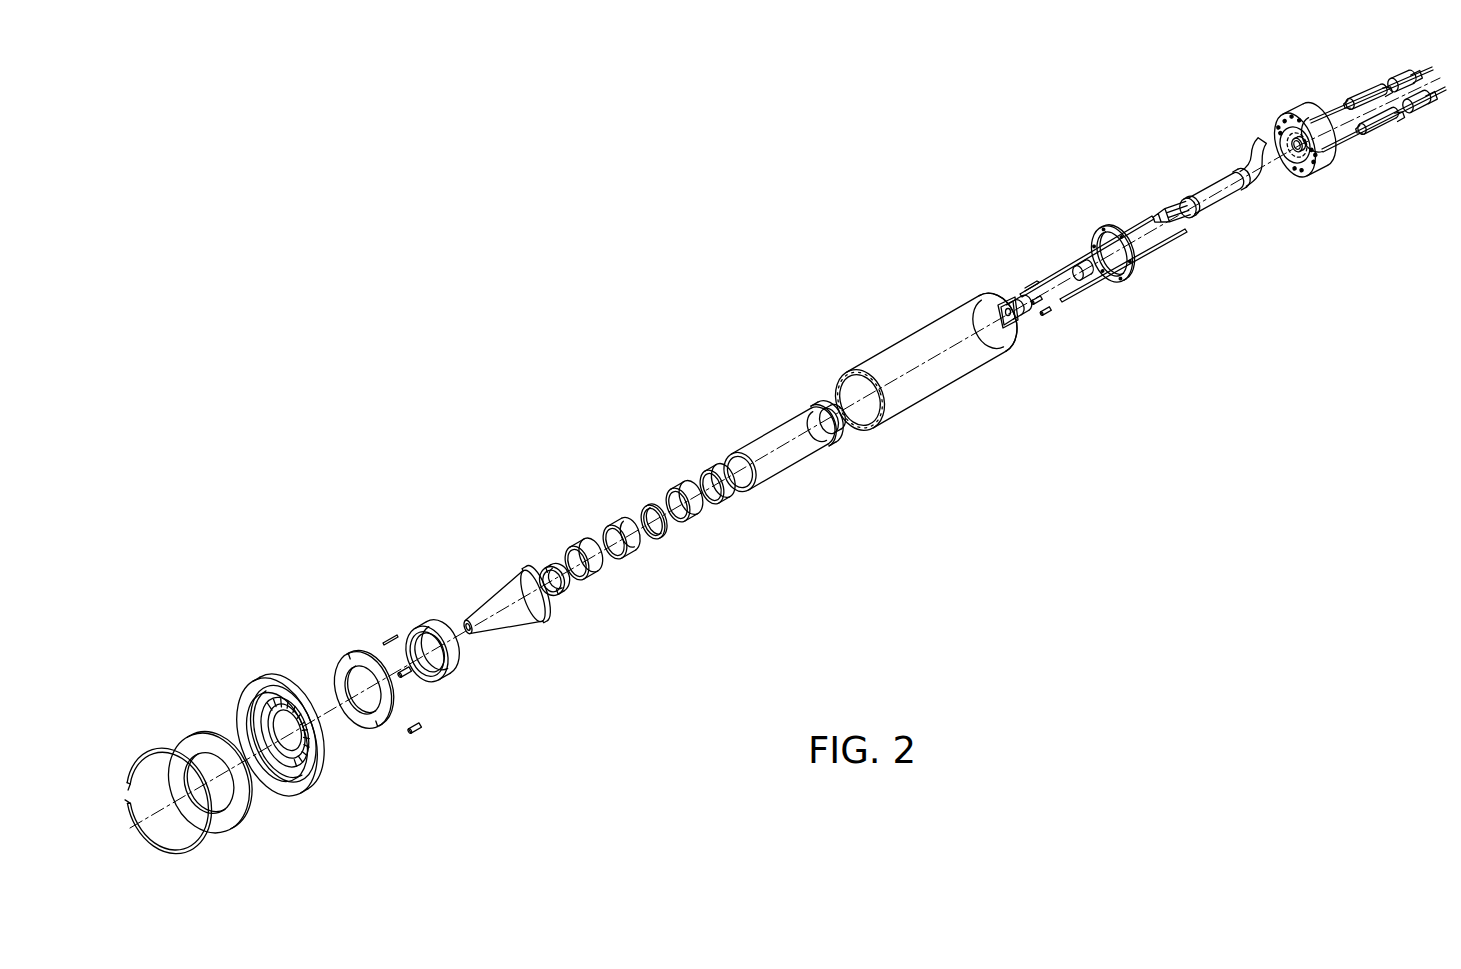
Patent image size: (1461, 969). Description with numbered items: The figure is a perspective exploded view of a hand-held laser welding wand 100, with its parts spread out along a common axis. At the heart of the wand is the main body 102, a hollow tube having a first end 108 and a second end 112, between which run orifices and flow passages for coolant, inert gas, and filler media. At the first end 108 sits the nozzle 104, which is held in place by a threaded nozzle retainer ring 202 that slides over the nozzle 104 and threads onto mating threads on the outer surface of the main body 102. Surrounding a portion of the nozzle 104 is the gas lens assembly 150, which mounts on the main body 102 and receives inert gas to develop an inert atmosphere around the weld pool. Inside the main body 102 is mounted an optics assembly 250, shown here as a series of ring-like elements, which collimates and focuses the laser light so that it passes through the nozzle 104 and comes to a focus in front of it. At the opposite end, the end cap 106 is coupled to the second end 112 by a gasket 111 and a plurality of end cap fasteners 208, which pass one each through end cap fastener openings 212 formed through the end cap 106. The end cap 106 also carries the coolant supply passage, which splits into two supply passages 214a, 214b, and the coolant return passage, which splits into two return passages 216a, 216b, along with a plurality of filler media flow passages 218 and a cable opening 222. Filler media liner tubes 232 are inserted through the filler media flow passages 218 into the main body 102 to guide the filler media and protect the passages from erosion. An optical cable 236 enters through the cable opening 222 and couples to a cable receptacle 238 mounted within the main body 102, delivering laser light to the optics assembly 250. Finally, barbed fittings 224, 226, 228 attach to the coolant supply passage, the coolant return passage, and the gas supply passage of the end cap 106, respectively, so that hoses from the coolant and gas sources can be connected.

The hand-held laser welding wand 100 is at (499, 212).
The main body 102 is at (925, 328).
The nozzle 104 is at (508, 633).
The end cap 106 is at (1277, 127).
The first end 108 is at (843, 374).
The gasket 111 is at (1127, 280).
The second end 112 is at (1007, 343).
The gas lens assembly 150 is at (430, 722).
The nozzle retainer ring 202 is at (448, 678).
The end cap fasteners 208 is at (1367, 135).
The end cap fastener openings 212 is at (1287, 123).
The supply passage 214a is at (1308, 120).
The supply passage 214b is at (1323, 167).
The return passage 216a is at (1273, 132).
The return passage 216b is at (1280, 170).
The filler media flow passages 218 is at (1270, 163).
The cable opening 222 is at (1293, 177).
The barbed fitting 224 is at (1427, 92).
The barbed fitting 226 is at (1387, 73).
The barbed fitting 228 is at (1400, 60).
The filler media liner tubes 232 is at (1115, 228).
The optical cable 236 is at (1192, 194).
The cable receptacle 238 is at (1003, 302).
The optics assembly 250 is at (858, 450).